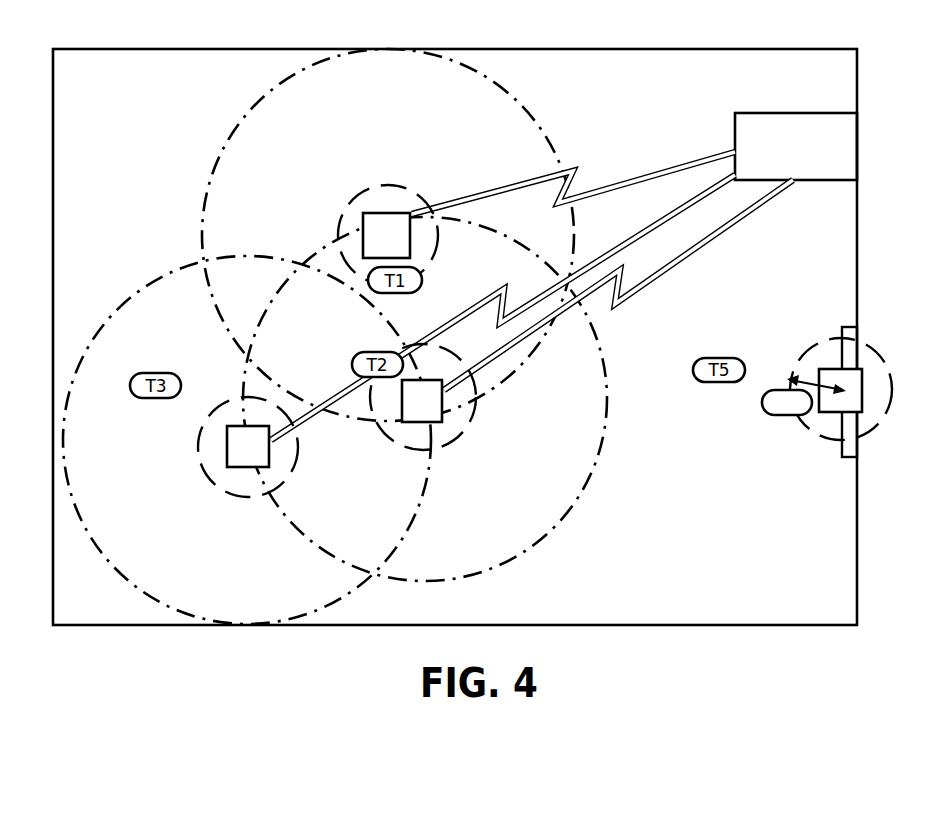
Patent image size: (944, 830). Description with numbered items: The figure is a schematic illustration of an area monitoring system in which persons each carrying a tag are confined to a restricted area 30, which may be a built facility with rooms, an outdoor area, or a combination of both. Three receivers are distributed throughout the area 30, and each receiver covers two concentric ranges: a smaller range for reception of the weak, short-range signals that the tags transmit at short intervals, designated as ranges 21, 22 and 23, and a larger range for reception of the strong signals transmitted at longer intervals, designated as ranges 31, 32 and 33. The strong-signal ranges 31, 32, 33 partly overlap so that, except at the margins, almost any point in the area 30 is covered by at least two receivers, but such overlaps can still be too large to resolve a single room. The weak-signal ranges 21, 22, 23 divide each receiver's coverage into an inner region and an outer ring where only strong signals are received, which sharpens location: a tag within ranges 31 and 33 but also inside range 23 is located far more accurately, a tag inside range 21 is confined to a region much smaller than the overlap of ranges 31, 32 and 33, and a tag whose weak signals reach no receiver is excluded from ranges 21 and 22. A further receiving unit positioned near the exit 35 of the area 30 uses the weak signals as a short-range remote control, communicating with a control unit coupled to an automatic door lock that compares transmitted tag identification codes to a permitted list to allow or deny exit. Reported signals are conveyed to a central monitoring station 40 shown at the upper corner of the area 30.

The restricted area 30 is at (656, 50).
The central monitoring station (CMS) 40 is at (772, 112).
The weak signal reception range of receiver R1 21 is at (428, 396).
The weak signal reception range of receiver R2 22 is at (250, 466).
The weak signal reception range of receiver R3 23 is at (388, 235).
The strong signal reception range of receiver R1 31 is at (425, 399).
The strong signal reception range of receiver R2 32 is at (247, 440).
The strong signal reception range of receiver R3 33 is at (388, 235).
The exit 35 is at (855, 328).